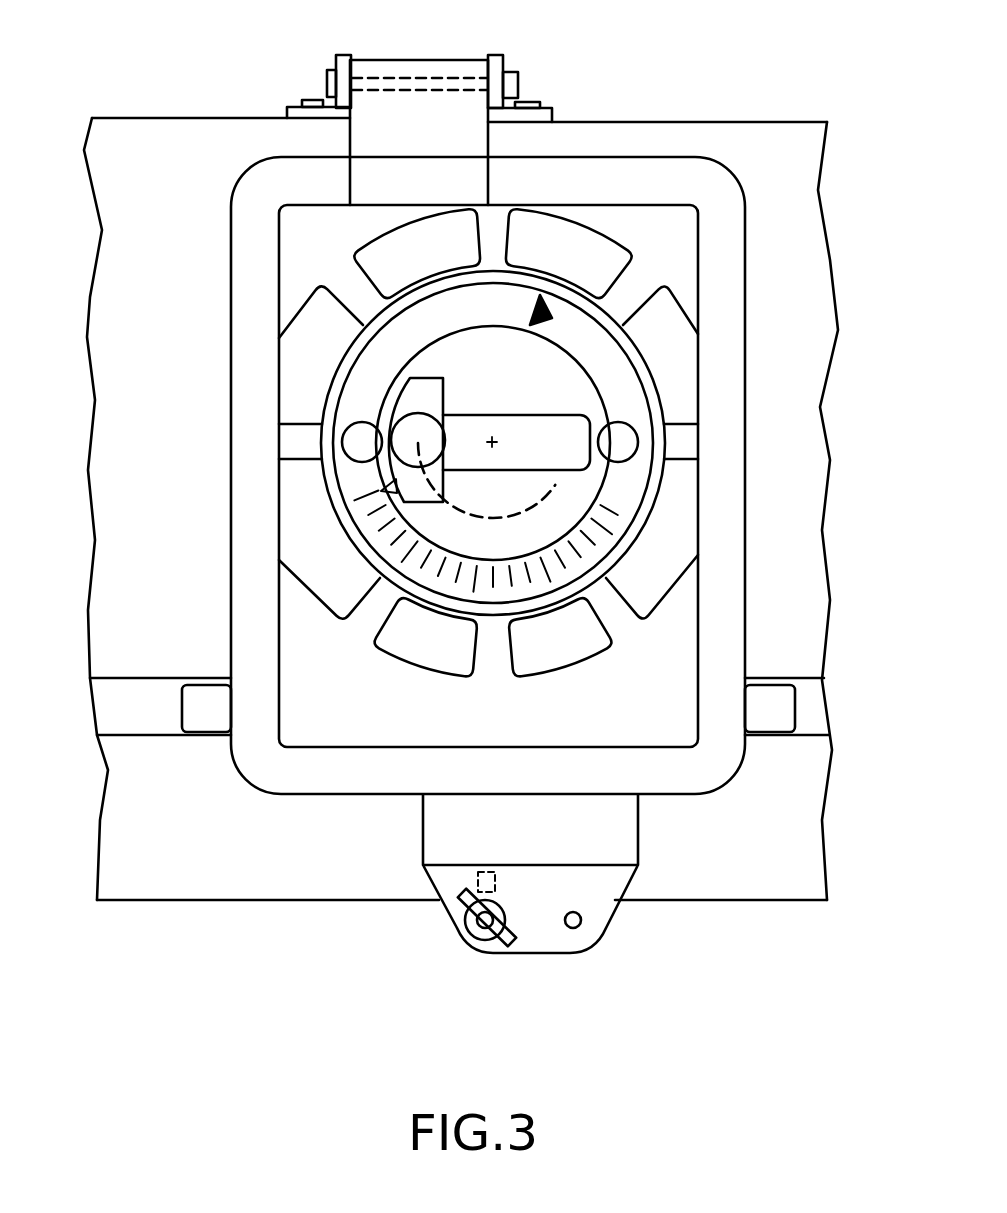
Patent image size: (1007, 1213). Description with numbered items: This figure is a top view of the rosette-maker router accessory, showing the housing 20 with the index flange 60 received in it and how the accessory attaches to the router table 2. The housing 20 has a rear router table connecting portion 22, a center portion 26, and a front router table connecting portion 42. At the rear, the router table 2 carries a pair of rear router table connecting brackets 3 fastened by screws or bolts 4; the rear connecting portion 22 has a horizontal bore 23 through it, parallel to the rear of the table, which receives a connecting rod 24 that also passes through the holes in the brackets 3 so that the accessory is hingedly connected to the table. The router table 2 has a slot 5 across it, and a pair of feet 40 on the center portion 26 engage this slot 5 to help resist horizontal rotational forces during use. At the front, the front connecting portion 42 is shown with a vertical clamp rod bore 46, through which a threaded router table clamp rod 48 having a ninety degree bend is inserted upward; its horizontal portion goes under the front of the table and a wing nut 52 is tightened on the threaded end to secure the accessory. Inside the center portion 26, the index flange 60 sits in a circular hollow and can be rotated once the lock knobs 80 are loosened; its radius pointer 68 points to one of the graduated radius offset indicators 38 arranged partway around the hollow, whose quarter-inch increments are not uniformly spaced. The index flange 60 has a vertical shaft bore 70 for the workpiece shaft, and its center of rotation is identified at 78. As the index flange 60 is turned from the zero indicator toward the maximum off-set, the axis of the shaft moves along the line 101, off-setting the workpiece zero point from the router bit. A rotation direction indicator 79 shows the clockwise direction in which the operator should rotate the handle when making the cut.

The router table 2 is at (150, 118).
The rear router table connecting brackets 3 is at (289, 115).
The screws or bolts 4 is at (312, 100).
The slot 5 is at (112, 702).
The housing 20 is at (245, 758).
The rear router table connecting portion 22 is at (420, 95).
The horizontal bore 23 is at (380, 78).
The connecting rod 24 is at (332, 82).
The center portion 26 is at (297, 735).
The graduated radius offset indicators 38 is at (387, 533).
The feet 40 is at (202, 690).
The front router table connecting portion 42 is at (600, 905).
The vertical clamp rod bore 46 is at (573, 928).
The router table clamp rod 48 is at (488, 892).
The wing nut 52 is at (486, 940).
The index flange 60 is at (583, 378).
The radius pointer 68 is at (382, 486).
The vertical shaft bore 70 is at (420, 440).
The center of rotation 78 is at (500, 440).
The rotation direction indicator 79 is at (546, 298).
The lock knobs 80 is at (355, 441).
The line 101 is at (453, 510).